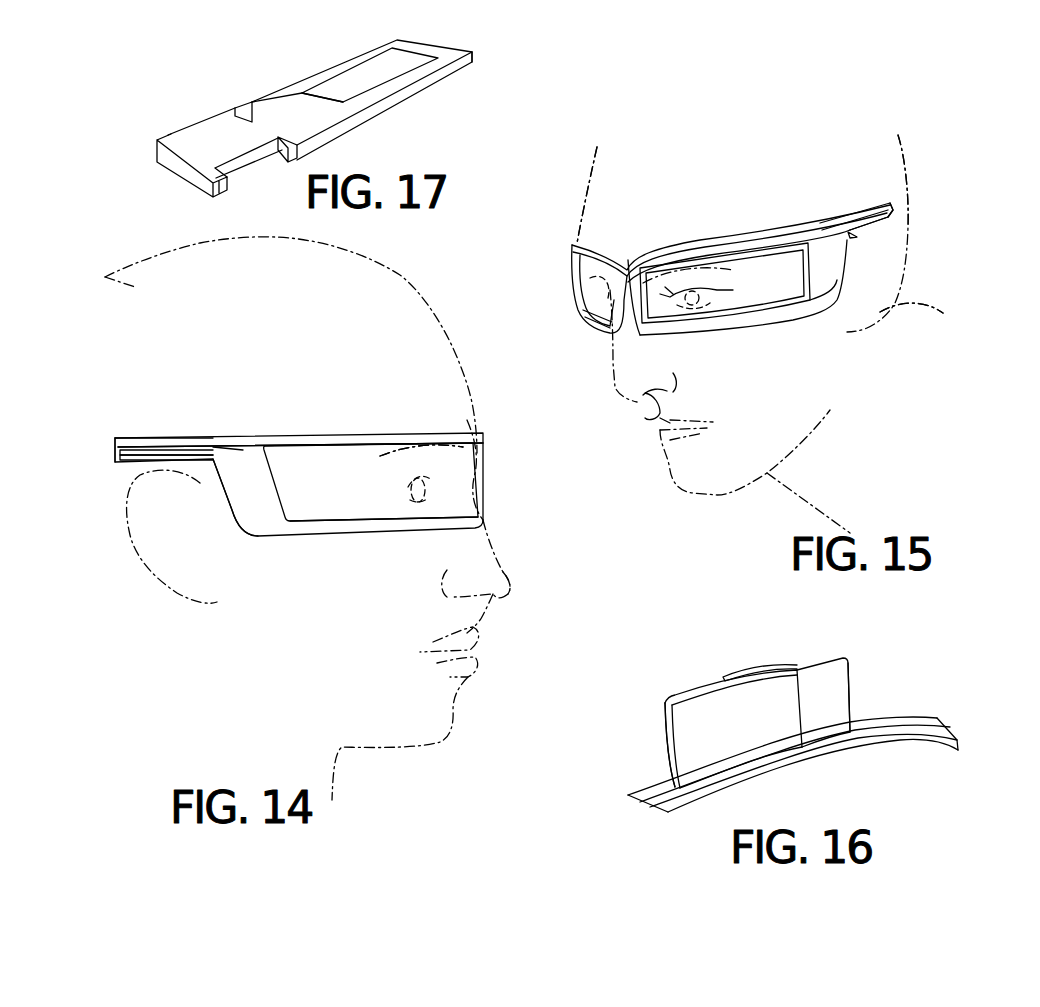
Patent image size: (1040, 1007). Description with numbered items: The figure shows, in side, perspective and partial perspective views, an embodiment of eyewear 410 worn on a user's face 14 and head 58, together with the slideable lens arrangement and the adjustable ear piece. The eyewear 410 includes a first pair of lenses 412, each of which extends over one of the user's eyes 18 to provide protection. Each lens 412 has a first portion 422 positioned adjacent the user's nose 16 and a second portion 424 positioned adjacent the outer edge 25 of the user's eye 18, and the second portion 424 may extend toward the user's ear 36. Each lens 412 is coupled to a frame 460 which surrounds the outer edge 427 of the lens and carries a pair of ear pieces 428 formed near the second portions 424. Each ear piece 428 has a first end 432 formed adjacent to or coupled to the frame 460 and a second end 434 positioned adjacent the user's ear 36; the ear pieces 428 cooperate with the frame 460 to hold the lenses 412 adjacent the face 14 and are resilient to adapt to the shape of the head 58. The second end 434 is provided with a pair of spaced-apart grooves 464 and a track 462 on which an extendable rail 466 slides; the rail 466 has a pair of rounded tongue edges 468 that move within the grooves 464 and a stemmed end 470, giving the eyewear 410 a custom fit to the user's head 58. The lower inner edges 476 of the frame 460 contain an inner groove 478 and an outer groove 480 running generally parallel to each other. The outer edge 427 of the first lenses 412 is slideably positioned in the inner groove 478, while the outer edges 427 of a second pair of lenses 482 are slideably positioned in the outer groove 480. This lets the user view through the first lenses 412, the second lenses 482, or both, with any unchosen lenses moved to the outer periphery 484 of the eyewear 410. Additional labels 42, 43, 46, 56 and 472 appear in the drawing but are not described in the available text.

In FIG. 15, the face 14 is at (632, 460).
In FIG. 14, the nose 16 is at (513, 587).
In FIG. 15, the nose 16 is at (613, 392).
In FIG. 14, the eye 18 is at (417, 500).
In FIG. 14, the outer edge of eye 25 is at (378, 493).
In FIG. 14, the ear 36 is at (160, 572).
In FIG. 15, the ear 36 is at (895, 303).
In FIG. 14, the brow region 42 is at (430, 447).
In FIG. 15, the brow region 42 is at (677, 270).
In FIG. 14, the forehead 43 is at (453, 427).
In FIG. 15, the forehead 43 is at (608, 237).
In FIG. 14, the cheek 46 is at (368, 577).
In FIG. 15, the cheek 46 is at (693, 377).
In FIG. 14, the head 56 is at (118, 332).
In FIG. 15, the head 56 is at (877, 133).
In FIG. 14, the head 58 is at (135, 287).
In FIG. 15, the head 58 is at (607, 147).
In FIG. 14, the eyewear 410 is at (488, 405).
In FIG. 15, the eyewear 410 is at (627, 187).
In FIG. 14, the lenses 412 is at (368, 507).
In FIG. 15, the lenses 412 is at (738, 310).
In FIG. 16, the lenses 412 is at (698, 713).
In FIG. 15, the first portion 422 is at (638, 257).
In FIG. 15, the second portion 424 is at (747, 243).
In FIG. 16, the outer edge 427 is at (667, 725).
In FIG. 14, the ear pieces 428 is at (192, 440).
In FIG. 15, the ear pieces 428 is at (847, 218).
In FIG. 17, the first end 432 is at (445, 50).
In FIG. 14, the first end 432 is at (243, 453).
In FIG. 15, the first end 432 is at (863, 237).
In FIG. 17, the second end 434 is at (360, 118).
In FIG. 14, the second end 434 is at (127, 440).
In FIG. 15, the second end 434 is at (892, 205).
In FIG. 14, the frame 460 is at (330, 450).
In FIG. 15, the frame 460 is at (782, 238).
In FIG. 17, the track 462 is at (383, 70).
In FIG. 14, the track 462 is at (147, 453).
In FIG. 17, the grooves 464 is at (347, 75).
In FIG. 17, the extendable rail 466 is at (203, 140).
In FIG. 17, the tongue edges 468 is at (248, 157).
In FIG. 17, the stemmed end 470 is at (175, 172).
In FIG. 14, the stemmed end 470 is at (127, 450).
In FIG. 17, the notch 472 is at (252, 110).
In FIG. 16, the lower inner edges 476 is at (780, 758).
In FIG. 16, the inner groove 478 is at (855, 740).
In FIG. 16, the outer groove 480 is at (907, 728).
In FIG. 14, the second lenses 482 is at (300, 512).
In FIG. 15, the second lenses 482 is at (778, 297).
In FIG. 16, the second lenses 482 is at (827, 660).
In FIG. 14, the outer periphery 484 is at (297, 485).
In FIG. 15, the outer periphery 484 is at (840, 263).